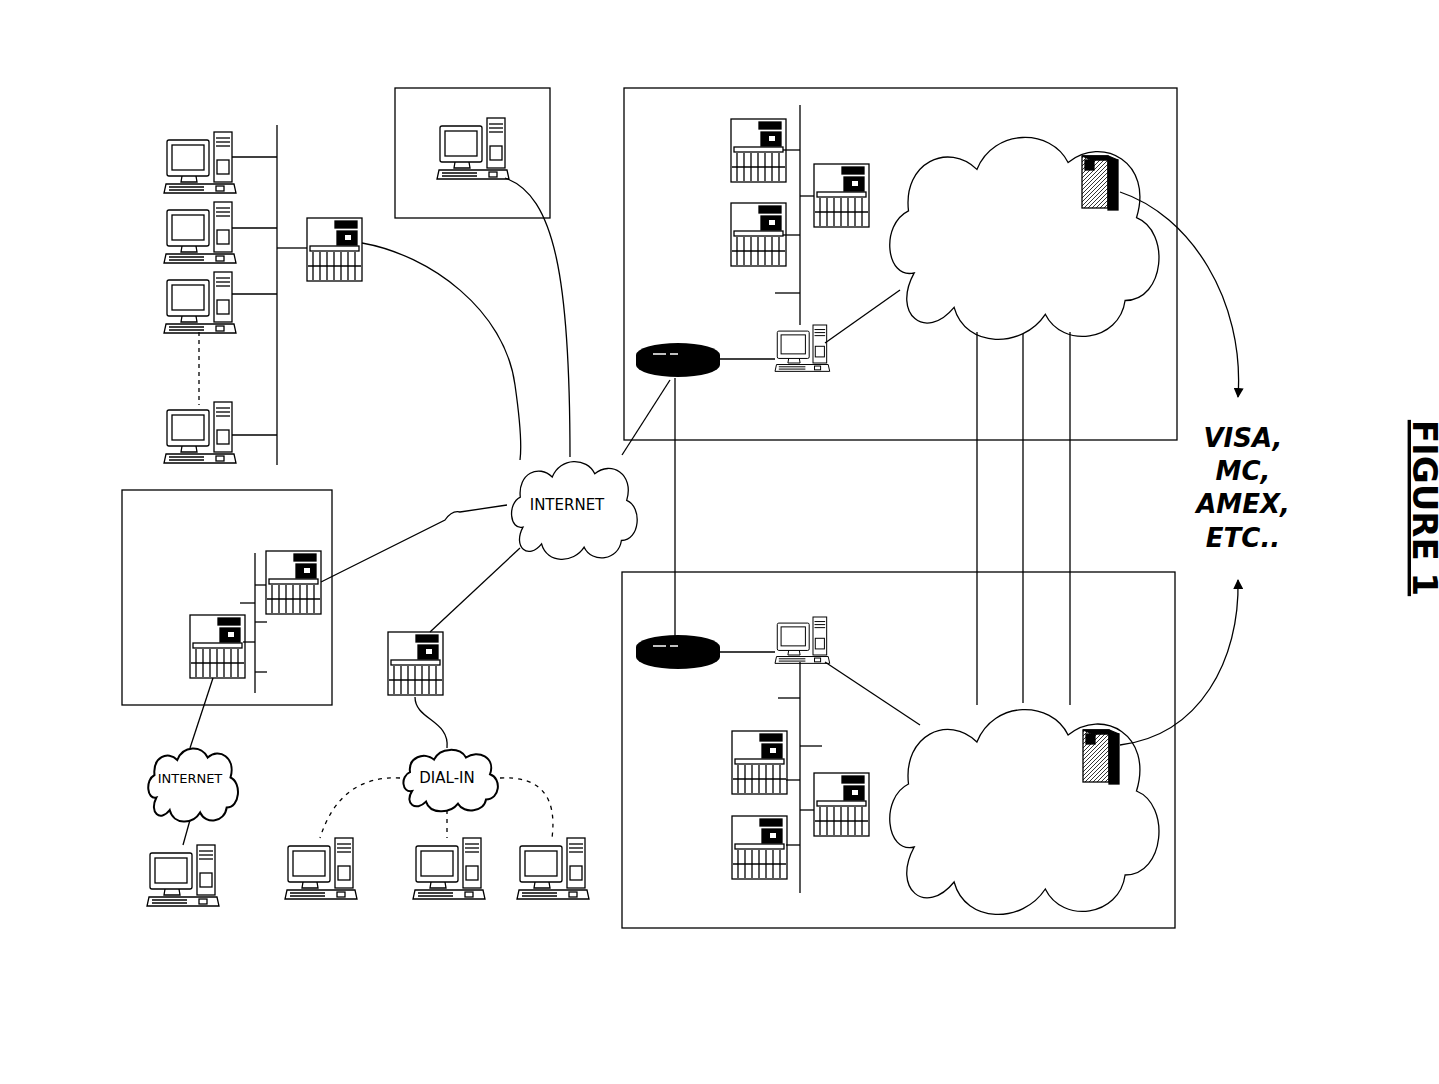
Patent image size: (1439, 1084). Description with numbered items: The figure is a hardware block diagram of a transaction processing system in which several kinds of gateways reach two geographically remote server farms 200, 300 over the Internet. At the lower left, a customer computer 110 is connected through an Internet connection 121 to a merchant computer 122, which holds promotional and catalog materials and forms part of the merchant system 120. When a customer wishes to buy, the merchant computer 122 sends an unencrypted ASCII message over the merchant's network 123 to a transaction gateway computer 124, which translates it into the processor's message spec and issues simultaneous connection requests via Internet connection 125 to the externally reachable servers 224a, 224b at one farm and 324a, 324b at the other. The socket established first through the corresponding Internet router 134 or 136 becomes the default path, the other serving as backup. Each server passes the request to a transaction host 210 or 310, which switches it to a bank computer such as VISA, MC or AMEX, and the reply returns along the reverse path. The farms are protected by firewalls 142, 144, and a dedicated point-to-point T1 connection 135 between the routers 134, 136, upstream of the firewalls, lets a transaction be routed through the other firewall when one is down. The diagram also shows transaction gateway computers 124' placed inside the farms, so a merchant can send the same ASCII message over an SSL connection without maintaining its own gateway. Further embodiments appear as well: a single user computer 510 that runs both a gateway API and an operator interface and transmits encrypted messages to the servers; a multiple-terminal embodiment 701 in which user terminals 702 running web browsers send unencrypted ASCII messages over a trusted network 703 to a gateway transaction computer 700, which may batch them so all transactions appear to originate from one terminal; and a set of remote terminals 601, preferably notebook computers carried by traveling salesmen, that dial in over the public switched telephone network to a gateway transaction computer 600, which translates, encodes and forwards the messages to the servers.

The customer computer 110 is at (220, 860).
The merchant system 120 is at (227, 597).
The Internet connection 121 is at (220, 722).
The merchant computer 122 is at (185, 640).
The merchant's network 123 is at (240, 575).
The transaction gateway computer 124 is at (384, 559).
The transaction gateway computer 124' is at (860, 499).
The Internet connection 125 is at (563, 323).
The Internet router 134 is at (718, 640).
The dedicated point-to-point T1 connection 135 is at (690, 548).
The Internet router 136 is at (692, 395).
The firewall 142 is at (838, 642).
The firewall 144 is at (850, 360).
The server farm 200 is at (898, 750).
The transaction host 210 is at (1065, 772).
The externally reachable server 224a is at (725, 785).
The externally reachable server 224b is at (725, 833).
The server farm 300 is at (900, 264).
The transaction host 310 is at (1065, 203).
The externally reachable server 324a is at (725, 222).
The externally reachable server 324b is at (722, 178).
The single user computer 510 is at (500, 272).
The gateway transaction computer 600 is at (458, 648).
The remote terminals 601 is at (405, 870).
The transaction gateway computer 700 is at (412, 319).
The multiple-terminal embodiment 701 is at (283, 178).
The user terminals 702 is at (165, 160).
The network 703 is at (283, 407).